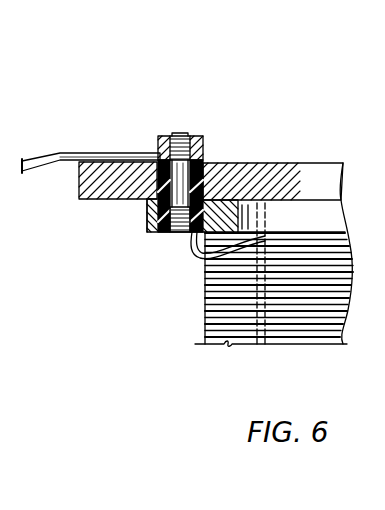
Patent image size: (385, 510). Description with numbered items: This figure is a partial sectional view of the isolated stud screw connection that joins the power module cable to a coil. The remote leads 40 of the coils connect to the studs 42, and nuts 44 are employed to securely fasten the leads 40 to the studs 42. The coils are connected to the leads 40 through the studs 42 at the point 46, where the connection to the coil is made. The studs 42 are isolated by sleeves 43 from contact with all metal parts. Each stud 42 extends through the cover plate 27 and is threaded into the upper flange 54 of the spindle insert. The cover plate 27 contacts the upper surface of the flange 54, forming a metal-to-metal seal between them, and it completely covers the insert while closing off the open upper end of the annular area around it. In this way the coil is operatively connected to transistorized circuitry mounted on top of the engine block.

The cover plate 27 is at (280, 163).
The leads 40 is at (115, 152).
The studs 42 is at (178, 133).
The sleeves 43 is at (167, 232).
The nuts 44 is at (205, 160).
The point 46 is at (188, 253).
The upper flange 54 is at (145, 217).